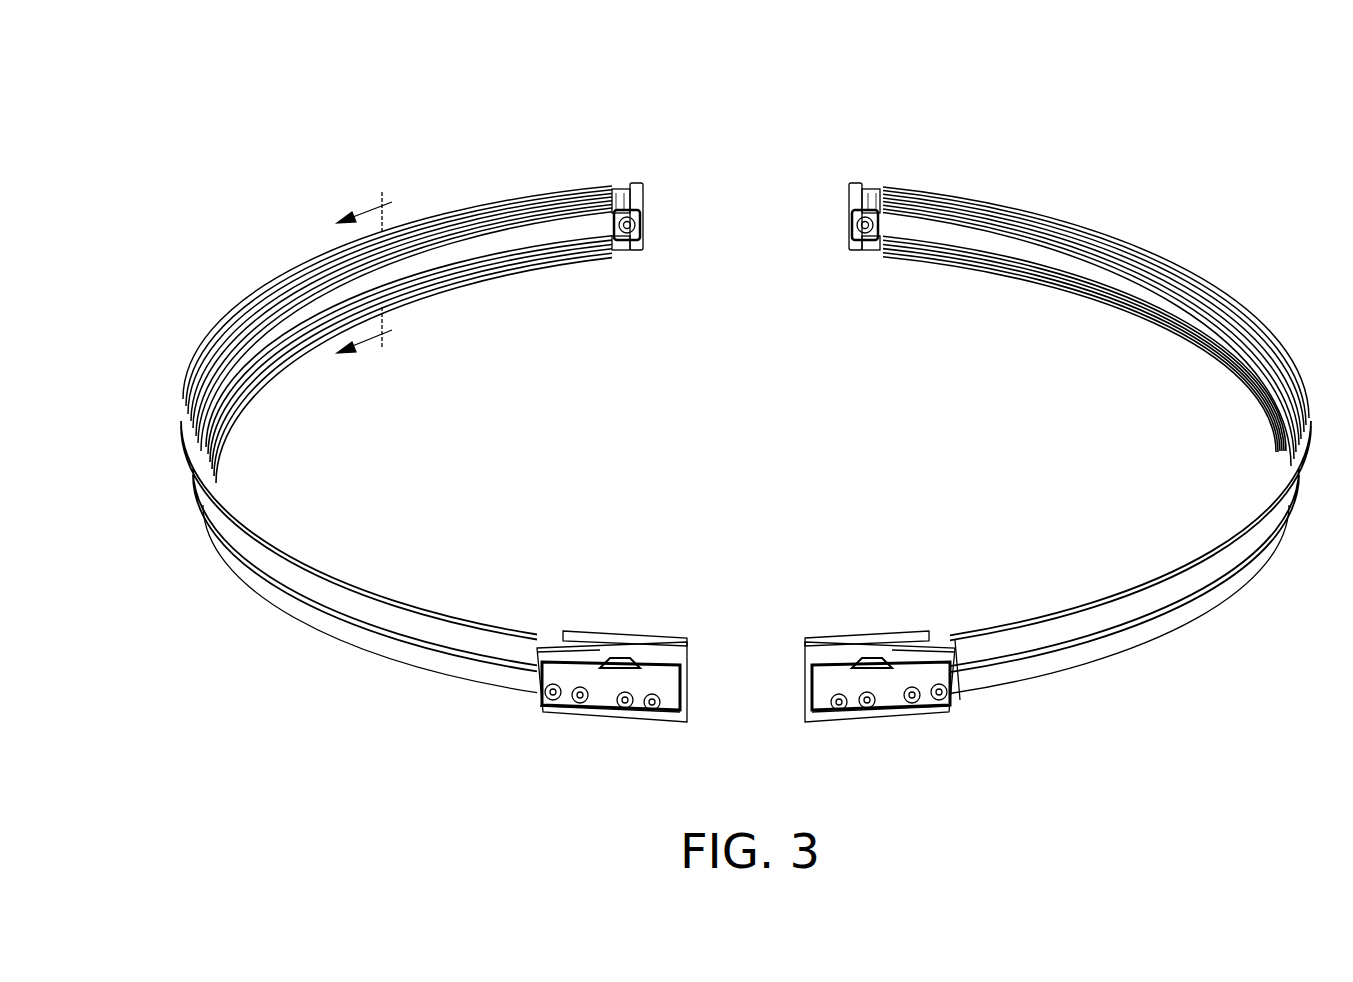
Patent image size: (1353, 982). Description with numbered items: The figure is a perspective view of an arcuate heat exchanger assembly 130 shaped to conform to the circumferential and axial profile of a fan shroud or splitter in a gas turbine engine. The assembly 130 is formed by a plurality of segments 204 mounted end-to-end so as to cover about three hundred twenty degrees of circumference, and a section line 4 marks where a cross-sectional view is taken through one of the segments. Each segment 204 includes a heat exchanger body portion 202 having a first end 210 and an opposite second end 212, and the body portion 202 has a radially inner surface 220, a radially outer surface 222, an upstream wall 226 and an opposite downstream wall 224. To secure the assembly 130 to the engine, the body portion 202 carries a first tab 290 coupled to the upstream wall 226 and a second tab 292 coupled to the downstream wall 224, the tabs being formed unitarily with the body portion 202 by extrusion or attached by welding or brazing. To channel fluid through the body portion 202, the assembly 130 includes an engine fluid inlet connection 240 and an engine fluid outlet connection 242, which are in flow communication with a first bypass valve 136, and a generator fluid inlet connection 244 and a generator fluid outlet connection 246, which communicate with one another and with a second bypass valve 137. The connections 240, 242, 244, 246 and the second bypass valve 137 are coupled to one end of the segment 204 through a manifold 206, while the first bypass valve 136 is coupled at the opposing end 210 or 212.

The heat exchanger assembly 130 is at (1116, 108).
The segment 204 is at (318, 243).
The first tab 290 is at (497, 199).
The second tab 292 is at (518, 272).
The radially outer surface 222 is at (1088, 642).
The line 4- 4 is at (363, 281).
The radially inner surface 220 is at (641, 249).
The first bypass valve 136 is at (643, 226).
The second end 212 is at (851, 186).
The upstream wall 226 is at (876, 186).
The downstream wall 224 is at (878, 252).
The manifold 206 is at (690, 652).
The second bypass valve 137 is at (632, 662).
The engine fluid inlet connection 240 is at (552, 701).
The engine fluid outlet connection 242 is at (578, 706).
The generator fluid outlet connection 246 is at (625, 709).
The generator fluid inlet connection 244 is at (652, 710).
The first end 210 is at (803, 688).
The heat exchanger body portion 202 is at (955, 640).